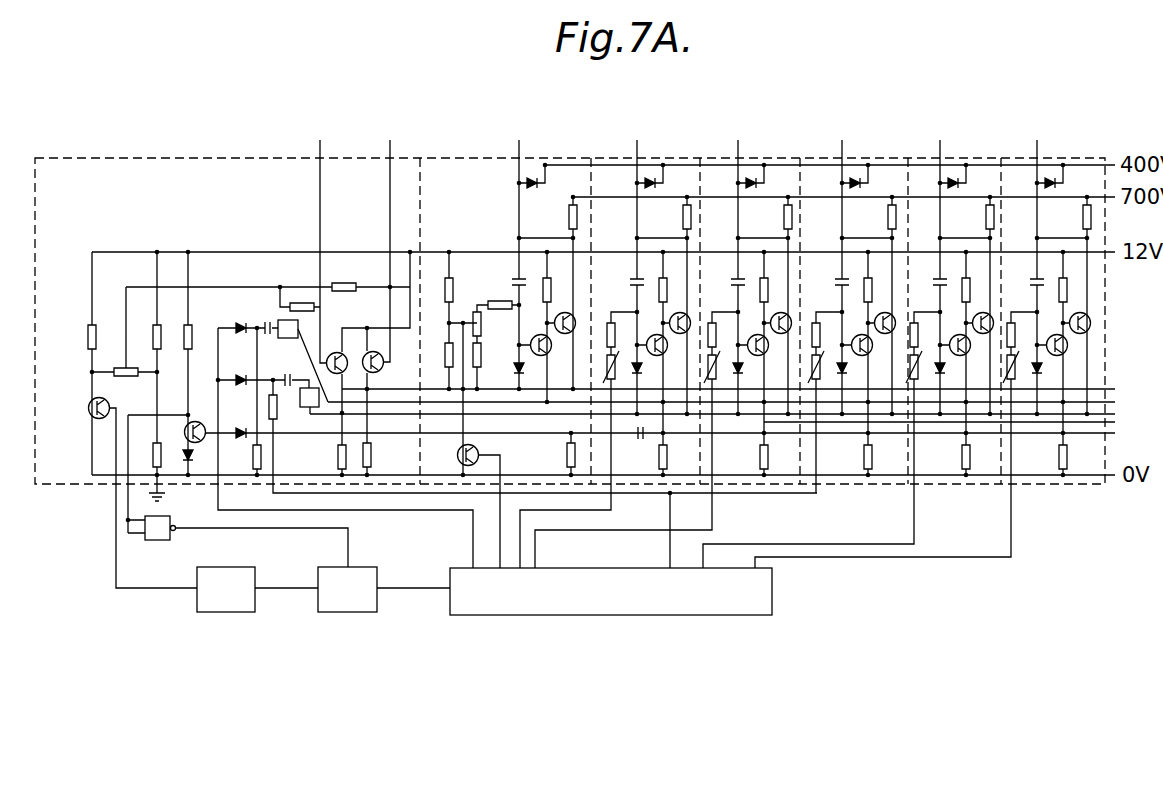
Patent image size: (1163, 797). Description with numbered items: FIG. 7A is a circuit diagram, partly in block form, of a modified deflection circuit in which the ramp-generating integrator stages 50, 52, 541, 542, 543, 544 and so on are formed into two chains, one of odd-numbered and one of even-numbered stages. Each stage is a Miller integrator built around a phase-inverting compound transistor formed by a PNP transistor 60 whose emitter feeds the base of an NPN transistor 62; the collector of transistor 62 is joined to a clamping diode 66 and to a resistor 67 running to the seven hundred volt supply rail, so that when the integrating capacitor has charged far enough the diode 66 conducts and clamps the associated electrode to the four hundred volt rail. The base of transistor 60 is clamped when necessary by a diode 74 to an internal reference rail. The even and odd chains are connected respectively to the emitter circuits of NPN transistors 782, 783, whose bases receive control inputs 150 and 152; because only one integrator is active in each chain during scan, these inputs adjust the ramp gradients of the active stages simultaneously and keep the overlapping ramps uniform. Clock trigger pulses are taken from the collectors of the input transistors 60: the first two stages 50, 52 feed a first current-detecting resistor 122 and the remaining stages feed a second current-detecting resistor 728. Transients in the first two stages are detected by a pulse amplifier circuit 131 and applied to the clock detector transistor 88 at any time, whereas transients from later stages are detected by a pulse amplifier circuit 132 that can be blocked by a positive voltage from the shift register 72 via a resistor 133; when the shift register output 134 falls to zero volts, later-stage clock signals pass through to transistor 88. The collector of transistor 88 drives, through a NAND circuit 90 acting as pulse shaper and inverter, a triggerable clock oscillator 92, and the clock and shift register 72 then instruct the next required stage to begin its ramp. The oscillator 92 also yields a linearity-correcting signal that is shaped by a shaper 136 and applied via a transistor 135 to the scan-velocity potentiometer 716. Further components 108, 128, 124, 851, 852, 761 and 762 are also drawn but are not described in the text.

The stage 50 is at (467, 158).
The stage 52 is at (617, 158).
The stage 541 is at (755, 158).
The stage 542 is at (860, 158).
The stage 543 is at (958, 158).
The stage 544 is at (1078, 158).
The clamping diode 66 is at (535, 183).
The resistor 67 is at (569, 218).
The PNP transistor 60 is at (533, 338).
The NPN transistor 62 is at (575, 312).
The diode 74 is at (517, 362).
The transistor 108 is at (460, 467).
The resistor 128 is at (567, 457).
The first current-detecting resistor 122 is at (667, 462).
The capacitor 124 is at (642, 442).
The second current-detecting resistor 728 is at (764, 462).
The shift register output 134 is at (700, 548).
The shift register 72 is at (772, 592).
The clock oscillator circuit 92 is at (345, 602).
The shaper 136 is at (217, 602).
The NAND circuit 90 is at (157, 540).
The clock detector transistor 88 is at (200, 478).
The resistor 133 is at (268, 420).
The pulse amplifier circuit 132 is at (310, 408).
The pulse amplifier circuit 131 is at (282, 320).
The diode-capacitor network 851 is at (262, 322).
The diode-capacitor network 852 is at (292, 358).
The resistor 762 is at (382, 414).
The line 761 is at (500, 389).
The scan-velocity potentiometer 716 is at (118, 372).
The transistor 135 is at (91, 412).
The control input 150 is at (318, 213).
The control input 152 is at (388, 214).
The NPN transistor 782 is at (333, 352).
The NPN transistor 783 is at (373, 350).